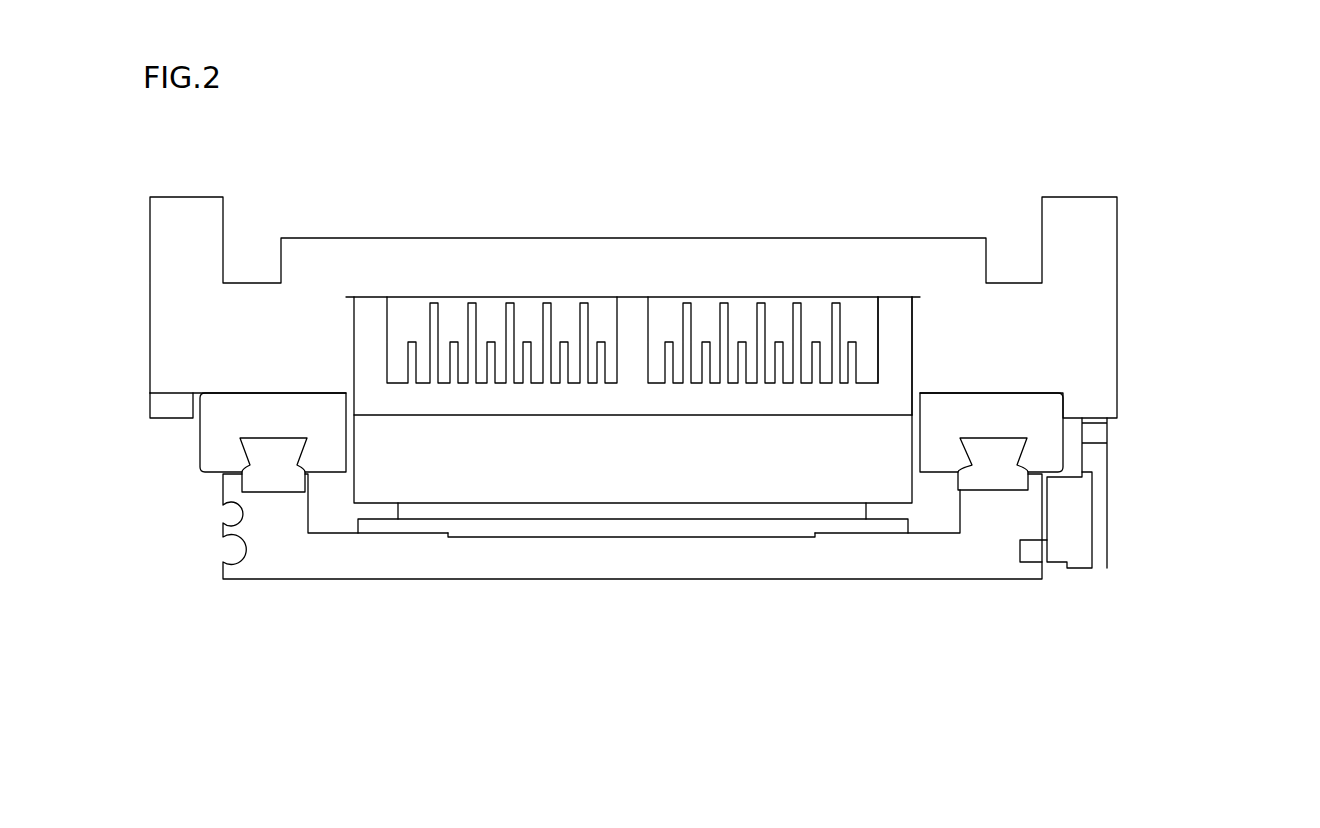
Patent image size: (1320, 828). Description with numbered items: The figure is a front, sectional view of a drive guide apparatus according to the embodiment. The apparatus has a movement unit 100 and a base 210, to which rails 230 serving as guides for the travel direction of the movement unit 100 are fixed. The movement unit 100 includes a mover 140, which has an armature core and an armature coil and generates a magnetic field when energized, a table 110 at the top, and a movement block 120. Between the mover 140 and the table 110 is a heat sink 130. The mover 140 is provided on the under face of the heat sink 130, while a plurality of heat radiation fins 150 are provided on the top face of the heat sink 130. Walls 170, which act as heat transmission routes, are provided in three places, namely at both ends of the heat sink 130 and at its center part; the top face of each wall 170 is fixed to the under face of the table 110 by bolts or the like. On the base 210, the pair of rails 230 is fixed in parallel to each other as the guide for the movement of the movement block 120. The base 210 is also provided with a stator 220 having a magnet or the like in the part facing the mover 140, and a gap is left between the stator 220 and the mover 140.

The movement unit 100 is at (1170, 316).
The table 110 is at (435, 242).
The movement block 120 is at (217, 447).
The heat sink 130 is at (668, 316).
The mover 140 is at (525, 465).
The heat radiation fins 150 is at (598, 312).
The walls 170 is at (895, 323).
The base 210 is at (862, 562).
The stator 220 is at (597, 527).
The rails 230 is at (285, 473).